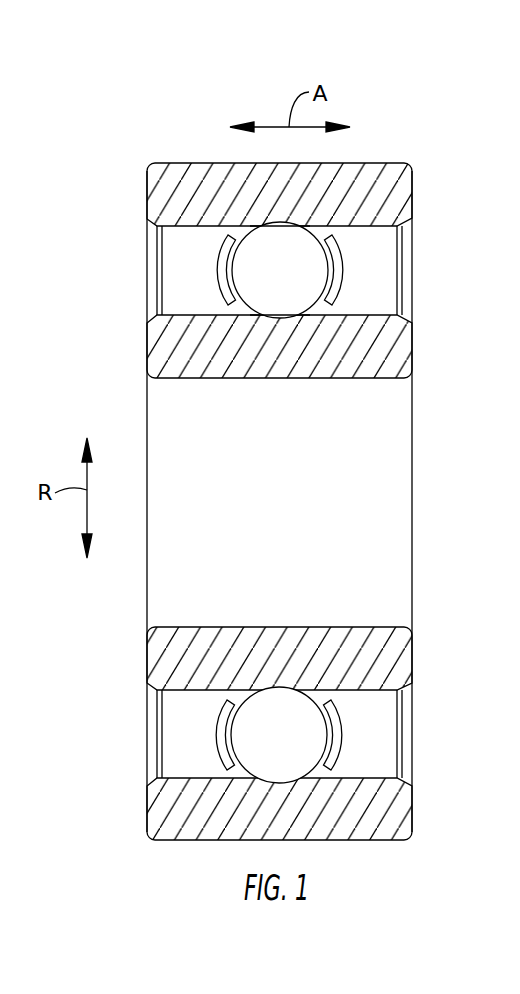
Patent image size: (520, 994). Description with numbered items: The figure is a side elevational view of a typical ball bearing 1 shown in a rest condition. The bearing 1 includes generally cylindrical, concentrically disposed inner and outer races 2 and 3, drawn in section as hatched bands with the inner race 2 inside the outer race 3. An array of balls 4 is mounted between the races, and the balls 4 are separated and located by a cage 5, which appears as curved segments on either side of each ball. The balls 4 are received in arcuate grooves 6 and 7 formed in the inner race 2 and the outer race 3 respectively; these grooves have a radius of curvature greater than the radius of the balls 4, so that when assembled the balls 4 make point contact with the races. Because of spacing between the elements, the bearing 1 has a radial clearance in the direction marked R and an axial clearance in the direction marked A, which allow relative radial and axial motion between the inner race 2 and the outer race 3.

The ball bearing 1 is at (403, 143).
The inner race 2 is at (400, 355).
The outer race 3 is at (402, 203).
The balls 4 is at (289, 283).
The cage 5 is at (338, 283).
The arcuate groove 6 is at (279, 321).
The arcuate groove 7 is at (284, 224).